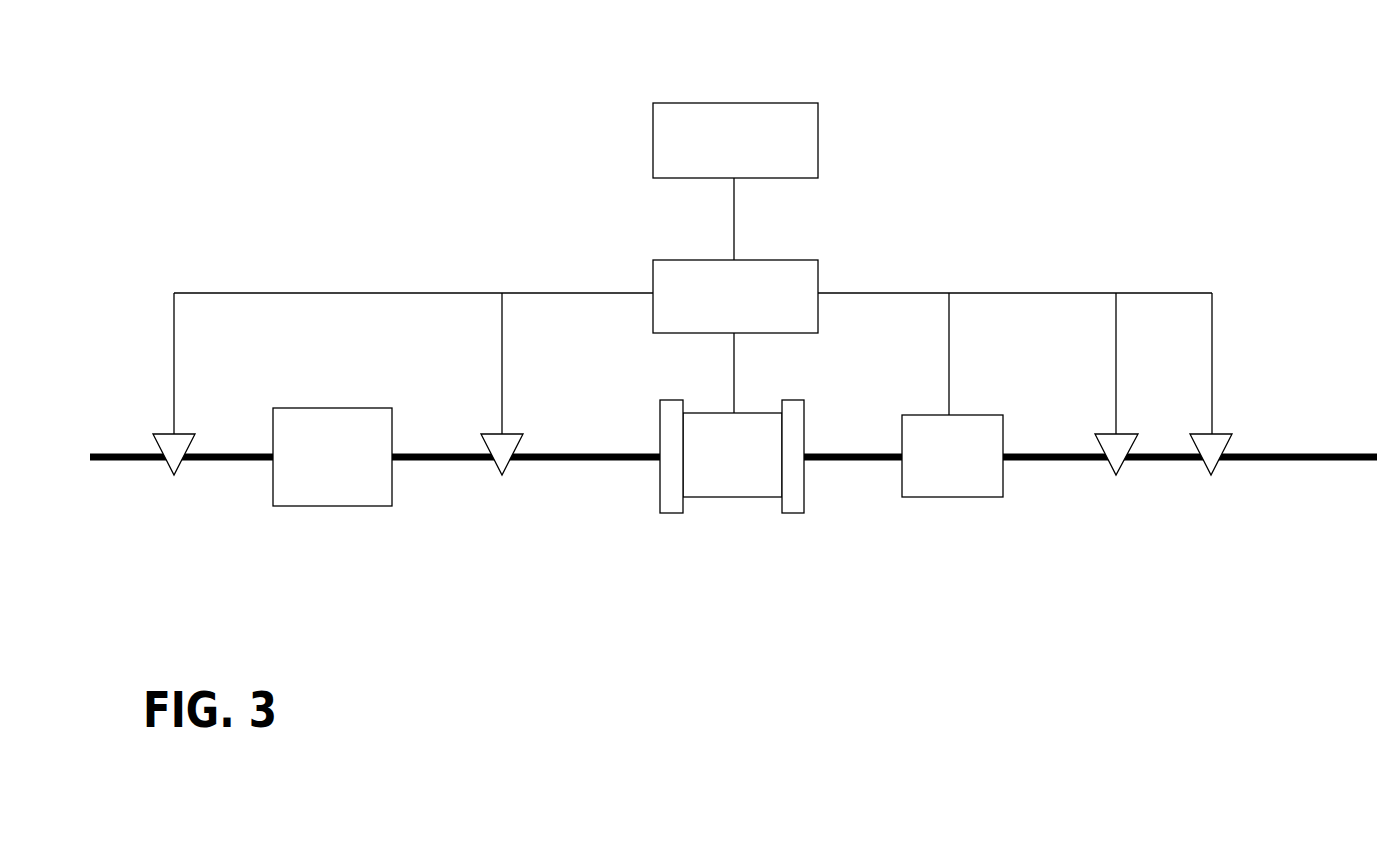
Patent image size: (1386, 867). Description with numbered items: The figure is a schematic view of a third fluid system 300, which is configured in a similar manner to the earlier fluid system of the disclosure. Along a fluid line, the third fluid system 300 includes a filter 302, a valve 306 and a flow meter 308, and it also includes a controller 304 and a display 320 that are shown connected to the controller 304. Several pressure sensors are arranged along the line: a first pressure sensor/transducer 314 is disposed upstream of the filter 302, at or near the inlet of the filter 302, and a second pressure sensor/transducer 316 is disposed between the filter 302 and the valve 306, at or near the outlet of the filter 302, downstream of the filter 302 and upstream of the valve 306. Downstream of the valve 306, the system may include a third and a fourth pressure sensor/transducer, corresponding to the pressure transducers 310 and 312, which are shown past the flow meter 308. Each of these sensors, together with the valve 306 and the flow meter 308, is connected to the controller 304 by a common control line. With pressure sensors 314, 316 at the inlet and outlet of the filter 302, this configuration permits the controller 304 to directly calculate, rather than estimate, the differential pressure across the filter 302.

The third fluid system 300 is at (352, 204).
The filter 302 is at (307, 408).
The controller 304 is at (673, 260).
The valve 306 is at (722, 498).
The flow meter 308 is at (950, 498).
The pressure transducer 310 is at (1116, 475).
The pressure transducer 312 is at (1211, 475).
The pressure transducer 314 is at (174, 475).
The pressure sensor 316 is at (502, 475).
The display 320 is at (742, 103).